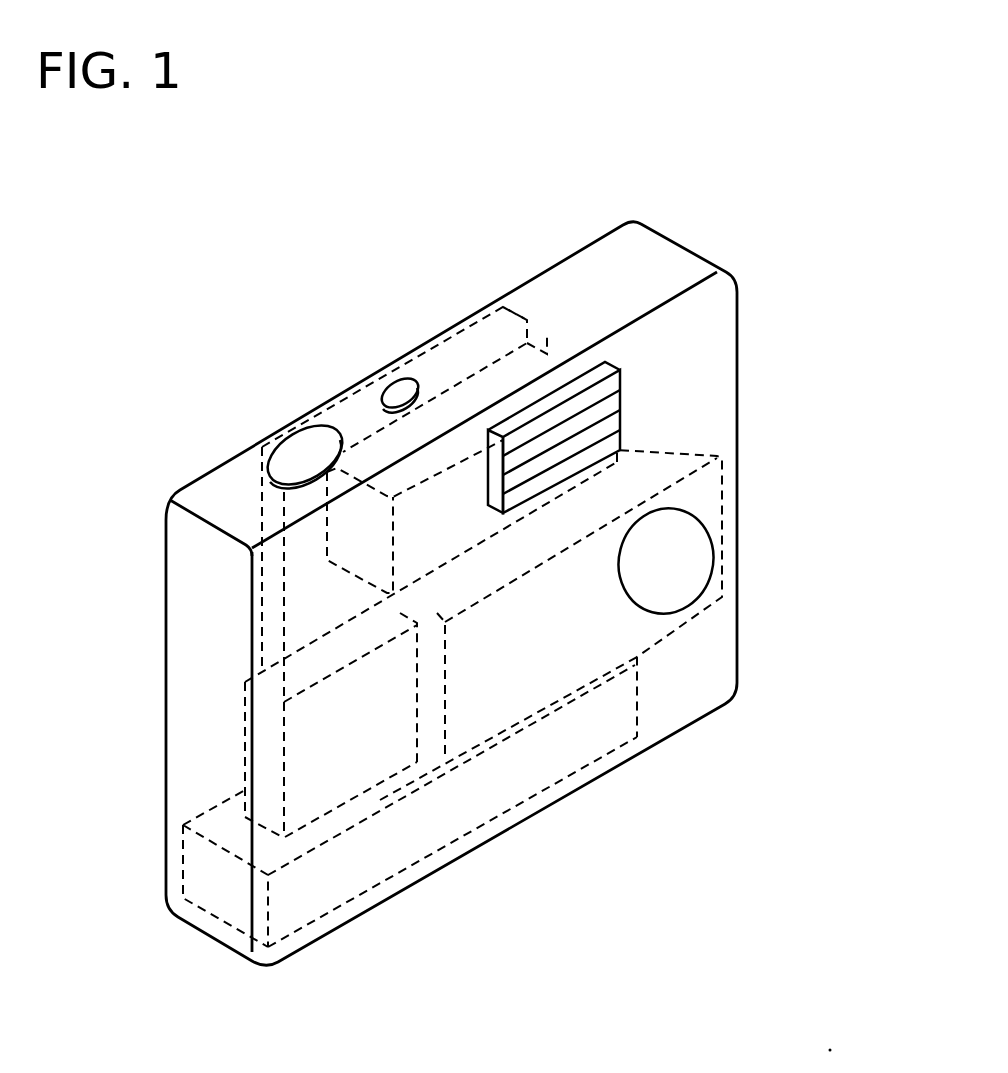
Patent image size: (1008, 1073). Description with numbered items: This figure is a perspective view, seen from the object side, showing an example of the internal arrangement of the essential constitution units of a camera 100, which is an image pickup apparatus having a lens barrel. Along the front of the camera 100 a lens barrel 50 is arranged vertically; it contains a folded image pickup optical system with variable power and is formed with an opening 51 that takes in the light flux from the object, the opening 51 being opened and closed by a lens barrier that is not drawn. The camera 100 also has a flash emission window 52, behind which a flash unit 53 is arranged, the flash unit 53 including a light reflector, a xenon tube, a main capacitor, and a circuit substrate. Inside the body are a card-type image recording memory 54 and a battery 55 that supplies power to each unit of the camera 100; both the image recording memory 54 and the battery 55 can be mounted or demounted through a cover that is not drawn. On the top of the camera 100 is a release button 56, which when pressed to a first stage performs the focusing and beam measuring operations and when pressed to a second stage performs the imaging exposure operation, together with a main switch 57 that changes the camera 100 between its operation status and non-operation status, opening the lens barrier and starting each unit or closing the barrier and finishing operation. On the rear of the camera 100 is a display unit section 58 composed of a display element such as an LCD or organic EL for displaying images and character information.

The camera 100 is at (547, 170).
The lens barrel 50 is at (555, 655).
The opening 51 is at (693, 543).
The flash emission window 52 is at (572, 410).
The flash unit 53 is at (547, 343).
The image recording memory 54 is at (363, 765).
The battery 55 is at (470, 803).
The release button 56 is at (302, 455).
The main switch 57 is at (398, 390).
The display unit section 58 is at (450, 347).